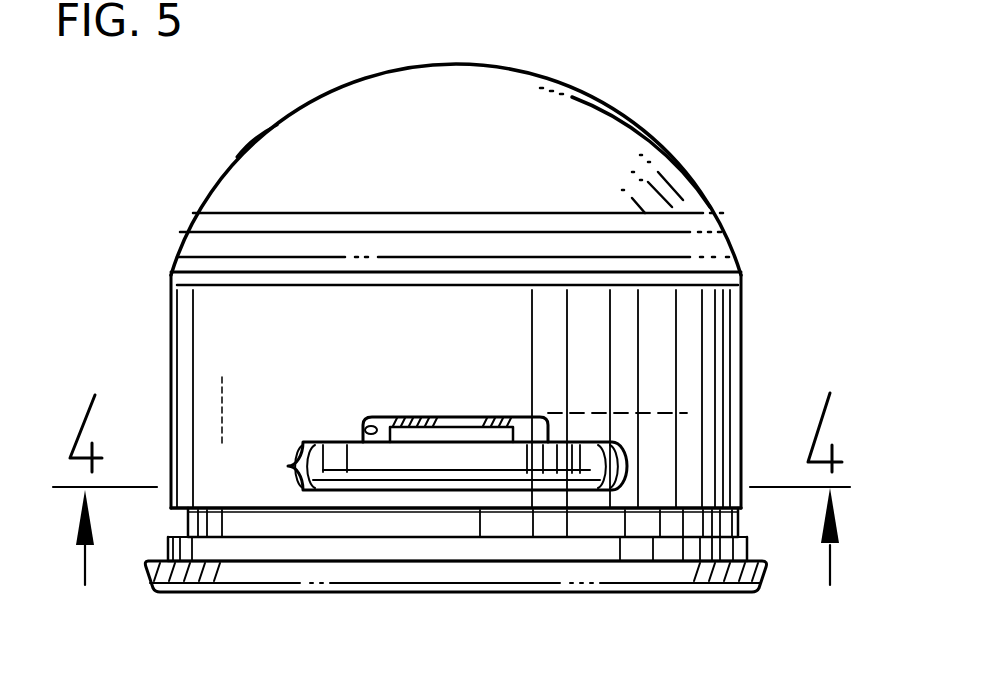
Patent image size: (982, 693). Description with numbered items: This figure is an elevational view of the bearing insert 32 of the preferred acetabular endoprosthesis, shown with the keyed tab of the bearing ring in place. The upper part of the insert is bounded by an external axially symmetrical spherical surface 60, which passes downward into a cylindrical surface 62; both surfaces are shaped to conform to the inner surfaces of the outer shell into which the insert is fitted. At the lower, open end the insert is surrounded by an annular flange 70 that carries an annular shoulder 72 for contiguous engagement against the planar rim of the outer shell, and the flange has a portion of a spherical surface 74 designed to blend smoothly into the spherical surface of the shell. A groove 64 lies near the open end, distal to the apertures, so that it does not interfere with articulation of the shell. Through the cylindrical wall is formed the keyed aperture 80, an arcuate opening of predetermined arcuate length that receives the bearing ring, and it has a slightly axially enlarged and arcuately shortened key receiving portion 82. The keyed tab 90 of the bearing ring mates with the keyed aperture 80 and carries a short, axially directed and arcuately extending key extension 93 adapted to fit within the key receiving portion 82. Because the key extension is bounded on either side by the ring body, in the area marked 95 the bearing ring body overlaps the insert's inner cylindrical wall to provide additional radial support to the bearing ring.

The spherical surface 60 is at (662, 138).
The bearing insert 32 is at (725, 213).
The cylindrical surface 62 is at (168, 337).
The groove 64 is at (740, 522).
The annular flange 70 is at (762, 563).
The annular shoulder 72 is at (165, 557).
The spherical surface portion 74 is at (147, 582).
The keyed aperture 80 is at (298, 500).
The key receiving portion 82 is at (380, 417).
The keyed tab 90 is at (450, 457).
The key extension 93 is at (447, 415).
The overlap area 95 is at (553, 433).